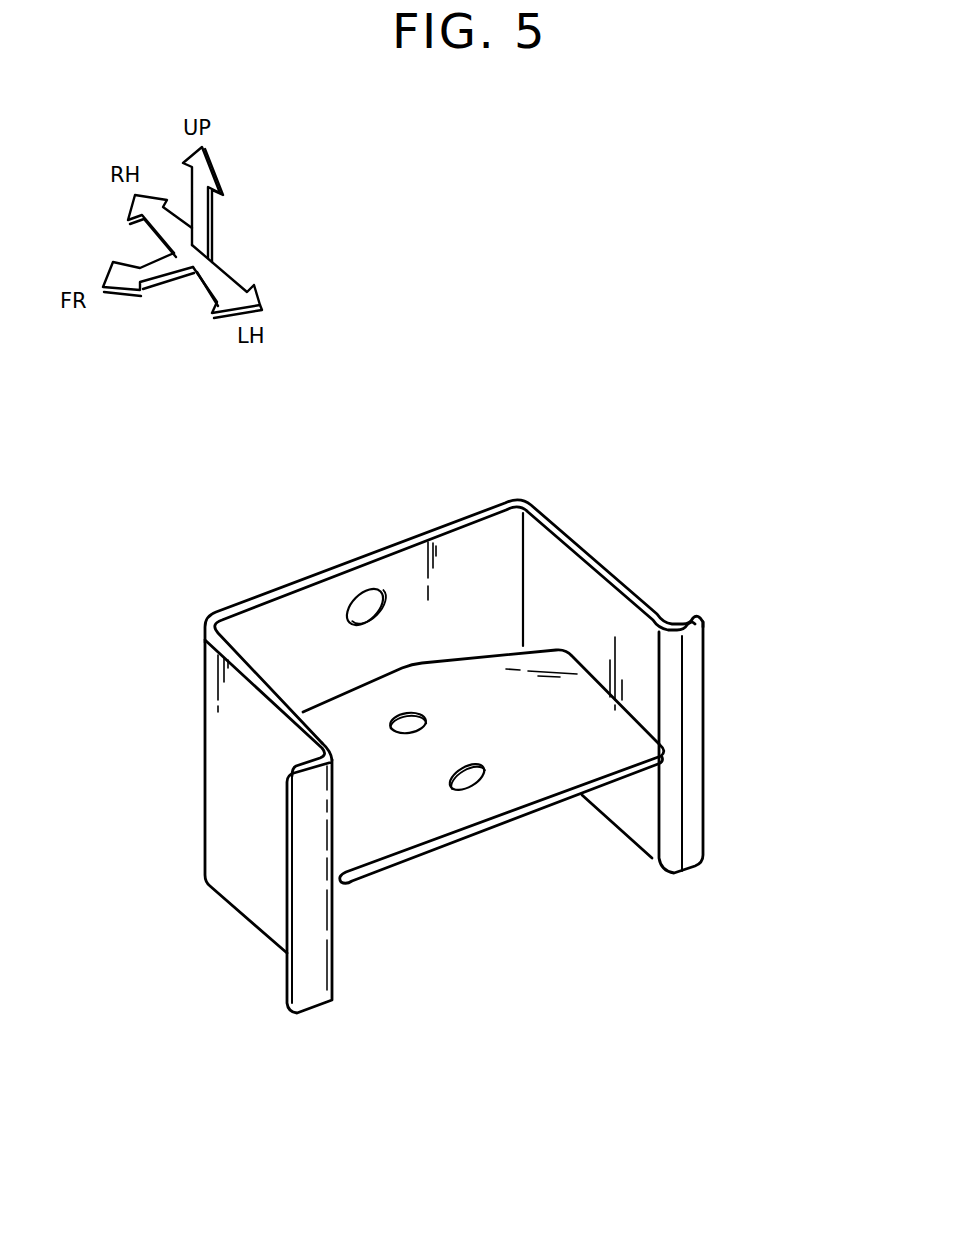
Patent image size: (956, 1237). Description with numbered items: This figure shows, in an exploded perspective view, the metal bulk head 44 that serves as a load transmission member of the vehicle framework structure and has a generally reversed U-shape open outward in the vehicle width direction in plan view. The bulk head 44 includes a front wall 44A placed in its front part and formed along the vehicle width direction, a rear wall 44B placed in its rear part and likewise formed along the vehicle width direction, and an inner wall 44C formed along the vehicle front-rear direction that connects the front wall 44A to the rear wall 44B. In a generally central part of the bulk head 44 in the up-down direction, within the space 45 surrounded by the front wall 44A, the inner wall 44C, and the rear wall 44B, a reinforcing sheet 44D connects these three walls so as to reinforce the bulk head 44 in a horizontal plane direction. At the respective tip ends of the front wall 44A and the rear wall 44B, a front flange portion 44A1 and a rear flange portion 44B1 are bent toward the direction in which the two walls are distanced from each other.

The bulk head 44 is at (549, 460).
The front wall 44A is at (233, 800).
The front flange portion 44A1 is at (300, 990).
The rear wall 44B is at (588, 574).
The rear flange portion 44B1 is at (692, 830).
The inner wall 44C is at (469, 547).
The reinforcing sheet 44D is at (513, 786).
The space 45 is at (492, 739).